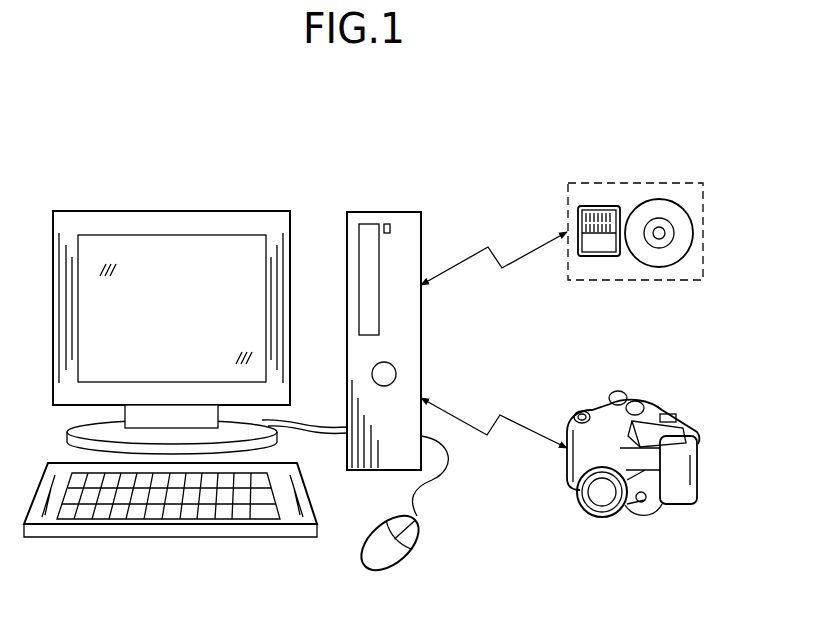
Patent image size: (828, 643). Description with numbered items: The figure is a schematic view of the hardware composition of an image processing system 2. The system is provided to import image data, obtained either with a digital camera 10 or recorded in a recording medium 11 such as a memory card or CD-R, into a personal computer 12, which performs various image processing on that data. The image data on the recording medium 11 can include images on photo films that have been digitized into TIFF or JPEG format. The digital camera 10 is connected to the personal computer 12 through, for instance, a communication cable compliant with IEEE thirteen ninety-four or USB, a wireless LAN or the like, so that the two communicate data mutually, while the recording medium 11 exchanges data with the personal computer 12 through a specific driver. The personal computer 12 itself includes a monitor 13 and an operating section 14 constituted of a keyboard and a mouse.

The image processing system 2 is at (334, 193).
The digital camera 10 is at (650, 512).
The recording medium 11 is at (634, 183).
The personal computer 12 is at (173, 211).
The monitor 13 is at (102, 248).
The operating section 14 is at (267, 548).